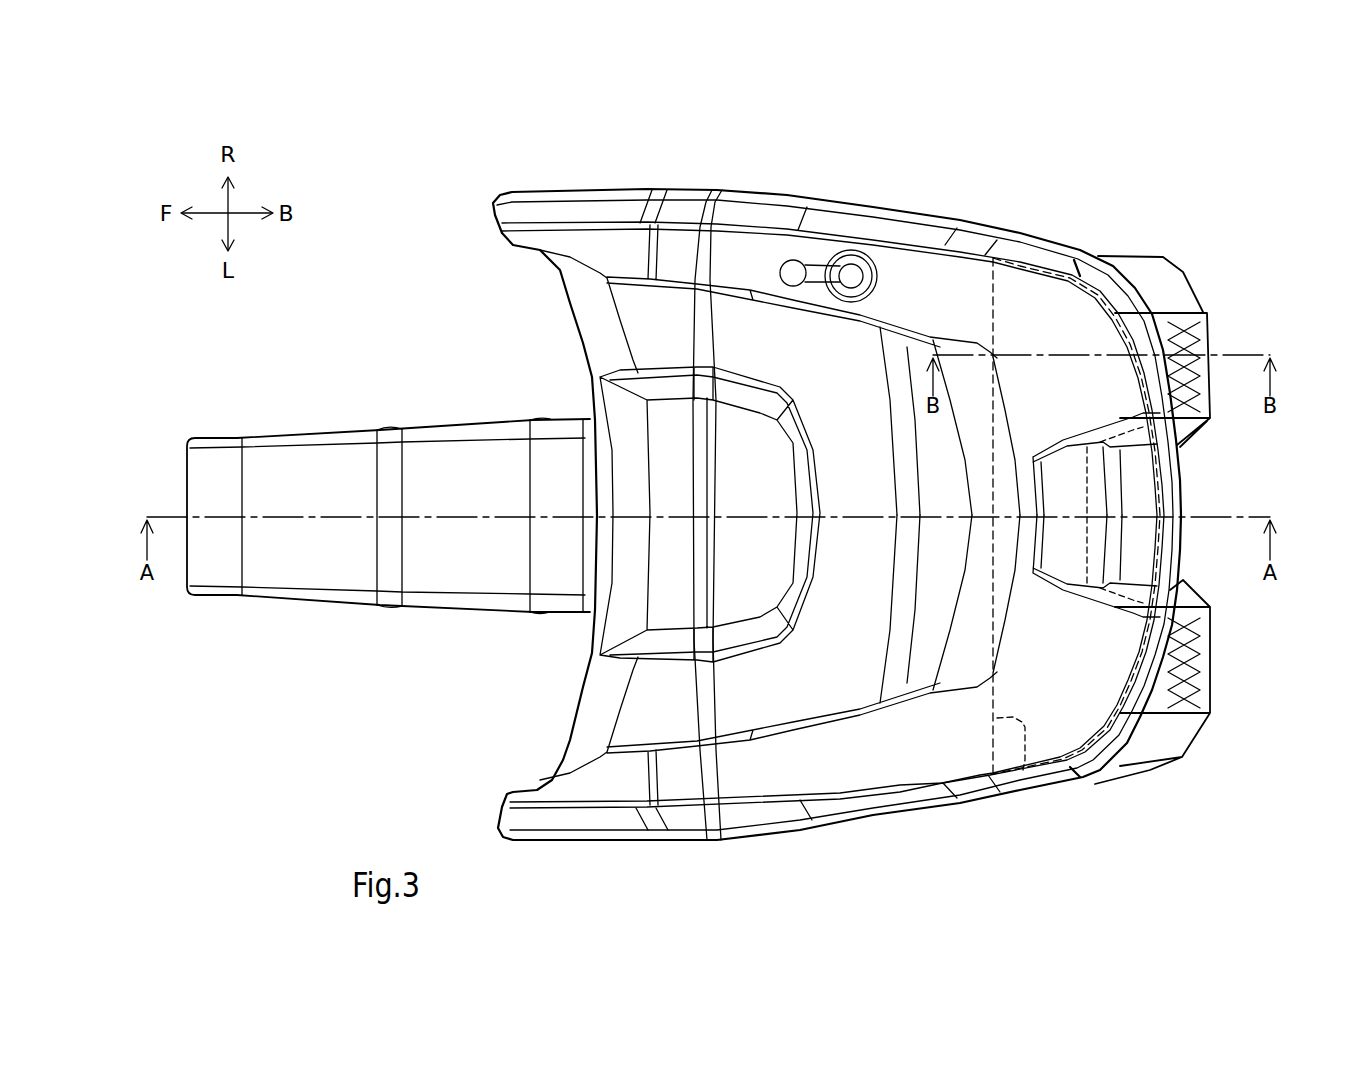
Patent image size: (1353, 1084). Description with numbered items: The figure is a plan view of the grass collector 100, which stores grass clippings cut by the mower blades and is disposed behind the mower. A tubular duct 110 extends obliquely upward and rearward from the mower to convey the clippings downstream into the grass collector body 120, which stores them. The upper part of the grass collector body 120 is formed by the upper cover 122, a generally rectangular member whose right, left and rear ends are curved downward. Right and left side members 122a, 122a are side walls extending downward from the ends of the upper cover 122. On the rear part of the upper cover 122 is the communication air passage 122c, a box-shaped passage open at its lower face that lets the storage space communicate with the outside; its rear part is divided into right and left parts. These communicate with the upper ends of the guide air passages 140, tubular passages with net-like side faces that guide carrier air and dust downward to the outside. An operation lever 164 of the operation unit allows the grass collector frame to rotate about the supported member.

The grass collector 100 is at (742, 514).
The duct 110 is at (363, 428).
The grass collector body 120 is at (1144, 206).
The upper cover 122 is at (917, 214).
The side member 122a is at (848, 205).
The communication air passage 122c is at (1025, 770).
The guide air passage 140 is at (1212, 330).
The operation lever 164 is at (790, 260).